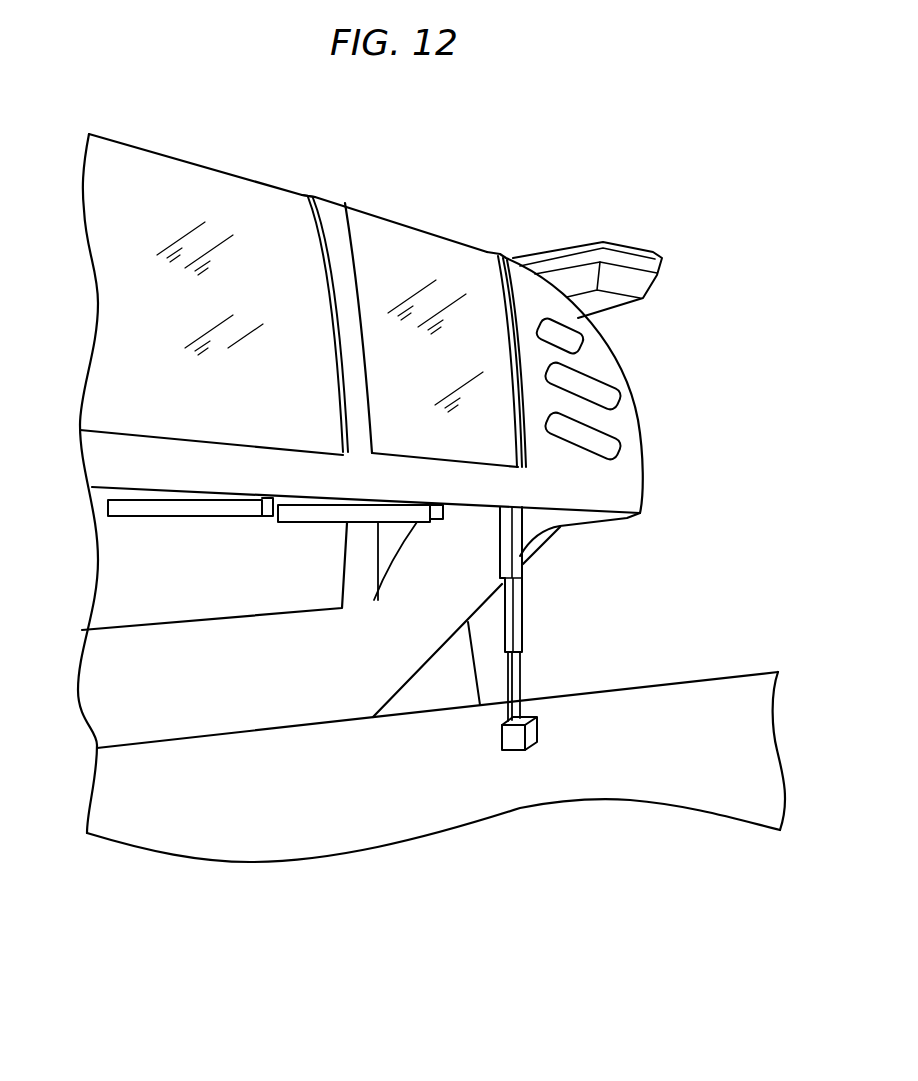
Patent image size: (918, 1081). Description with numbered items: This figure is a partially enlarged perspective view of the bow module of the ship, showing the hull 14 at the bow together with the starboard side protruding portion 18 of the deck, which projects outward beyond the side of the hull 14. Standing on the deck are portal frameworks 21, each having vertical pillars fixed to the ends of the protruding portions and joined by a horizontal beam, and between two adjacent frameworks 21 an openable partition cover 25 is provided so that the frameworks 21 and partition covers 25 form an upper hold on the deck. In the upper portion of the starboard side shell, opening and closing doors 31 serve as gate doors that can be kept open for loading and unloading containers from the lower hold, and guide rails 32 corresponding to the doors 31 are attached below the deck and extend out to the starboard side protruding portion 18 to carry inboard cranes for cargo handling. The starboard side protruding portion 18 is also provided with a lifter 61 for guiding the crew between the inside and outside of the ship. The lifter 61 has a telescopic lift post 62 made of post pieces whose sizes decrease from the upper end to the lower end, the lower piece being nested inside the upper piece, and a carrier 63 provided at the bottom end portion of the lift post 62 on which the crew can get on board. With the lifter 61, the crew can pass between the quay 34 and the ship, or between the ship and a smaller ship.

The hull 14 is at (272, 703).
The starboard side protruding portion 18 is at (467, 488).
The portal framework 21 is at (332, 222).
The partition cover 25 is at (193, 185).
The opening and closing door 31 is at (137, 567).
The guide rail 32 is at (185, 510).
The quay 34 is at (708, 712).
The lifter 61 is at (550, 675).
The lift post 62 is at (535, 597).
The carrier 63 is at (515, 745).